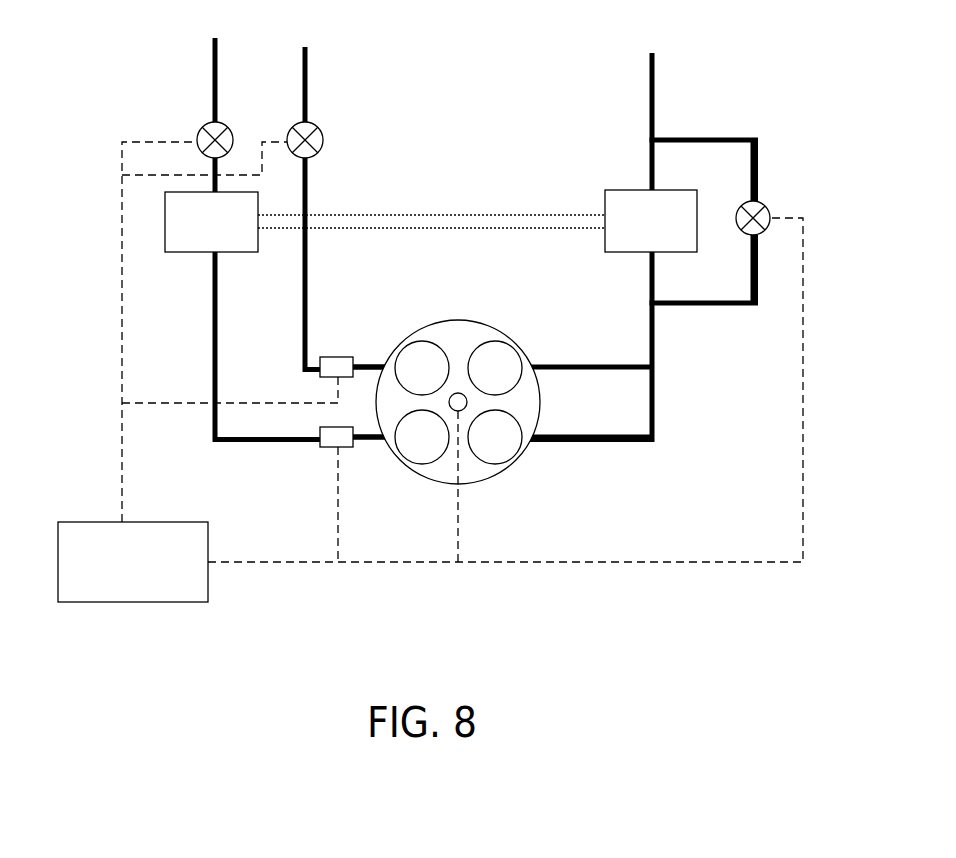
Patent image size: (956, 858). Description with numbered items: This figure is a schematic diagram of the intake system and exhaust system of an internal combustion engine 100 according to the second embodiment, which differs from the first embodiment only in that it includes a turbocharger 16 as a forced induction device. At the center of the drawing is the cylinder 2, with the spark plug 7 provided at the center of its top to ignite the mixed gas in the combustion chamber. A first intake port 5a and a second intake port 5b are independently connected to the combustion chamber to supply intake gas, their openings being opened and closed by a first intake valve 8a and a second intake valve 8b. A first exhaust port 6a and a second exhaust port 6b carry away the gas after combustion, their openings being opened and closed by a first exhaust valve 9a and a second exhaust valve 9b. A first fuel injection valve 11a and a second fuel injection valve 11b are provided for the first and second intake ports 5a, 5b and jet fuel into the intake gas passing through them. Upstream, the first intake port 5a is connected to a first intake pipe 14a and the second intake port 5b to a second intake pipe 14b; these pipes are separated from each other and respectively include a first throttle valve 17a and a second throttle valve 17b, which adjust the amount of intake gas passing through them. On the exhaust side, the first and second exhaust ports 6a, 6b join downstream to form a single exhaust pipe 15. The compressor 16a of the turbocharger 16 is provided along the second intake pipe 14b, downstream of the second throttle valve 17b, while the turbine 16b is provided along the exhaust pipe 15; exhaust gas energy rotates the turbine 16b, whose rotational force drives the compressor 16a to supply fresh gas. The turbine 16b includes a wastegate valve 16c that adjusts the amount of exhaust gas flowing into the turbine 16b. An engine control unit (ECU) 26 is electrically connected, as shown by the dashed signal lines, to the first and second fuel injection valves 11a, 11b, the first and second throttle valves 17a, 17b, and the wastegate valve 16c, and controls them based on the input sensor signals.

The internal combustion engine 100 is at (487, 97).
The cylinder 2 is at (467, 399).
The first intake port 5a is at (367, 365).
The second intake port 5b is at (363, 450).
The first exhaust port 6a is at (582, 367).
The second exhaust port 6b is at (600, 440).
The spark plug 7 is at (457, 392).
The first intake valve 8a is at (415, 342).
The second intake valve 8b is at (418, 465).
The first exhaust valve 9a is at (510, 340).
The second exhaust valve 9b is at (505, 460).
The first fuel injection valve 11a is at (333, 357).
The second fuel injection valve 11b is at (322, 448).
The first intake pipe 14a is at (310, 83).
The second intake pipe 14b is at (211, 82).
The exhaust pipe 15 is at (655, 85).
The turbocharger 16 is at (492, 198).
The compressor 16a is at (237, 252).
The turbine 16b is at (628, 192).
The wastegate valve 16c is at (768, 210).
The first throttle valve 17a is at (322, 133).
The second throttle valve 17b is at (201, 128).
The engine control unit (ECU) 26 is at (155, 603).